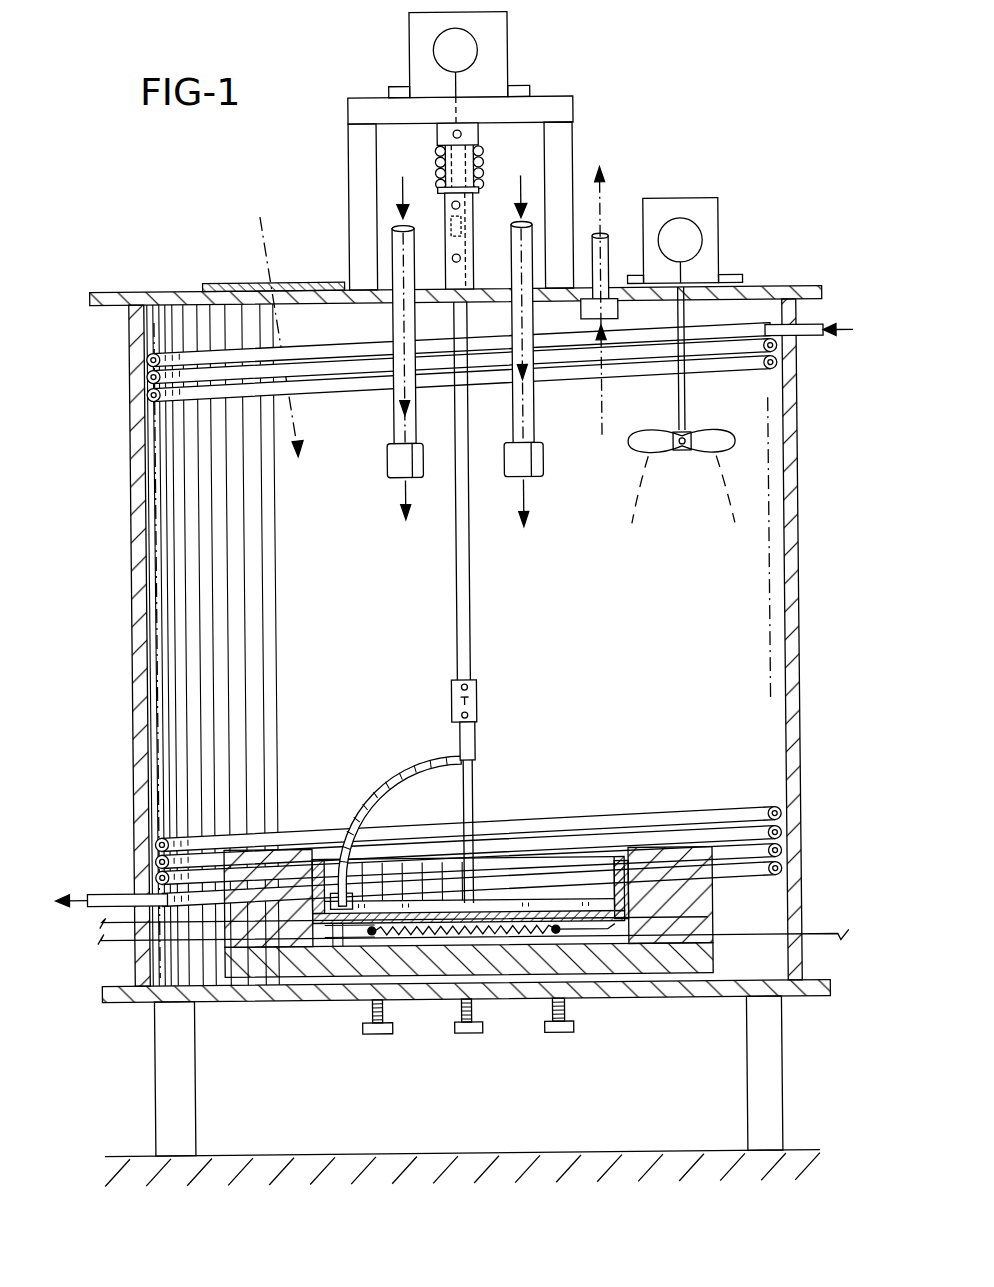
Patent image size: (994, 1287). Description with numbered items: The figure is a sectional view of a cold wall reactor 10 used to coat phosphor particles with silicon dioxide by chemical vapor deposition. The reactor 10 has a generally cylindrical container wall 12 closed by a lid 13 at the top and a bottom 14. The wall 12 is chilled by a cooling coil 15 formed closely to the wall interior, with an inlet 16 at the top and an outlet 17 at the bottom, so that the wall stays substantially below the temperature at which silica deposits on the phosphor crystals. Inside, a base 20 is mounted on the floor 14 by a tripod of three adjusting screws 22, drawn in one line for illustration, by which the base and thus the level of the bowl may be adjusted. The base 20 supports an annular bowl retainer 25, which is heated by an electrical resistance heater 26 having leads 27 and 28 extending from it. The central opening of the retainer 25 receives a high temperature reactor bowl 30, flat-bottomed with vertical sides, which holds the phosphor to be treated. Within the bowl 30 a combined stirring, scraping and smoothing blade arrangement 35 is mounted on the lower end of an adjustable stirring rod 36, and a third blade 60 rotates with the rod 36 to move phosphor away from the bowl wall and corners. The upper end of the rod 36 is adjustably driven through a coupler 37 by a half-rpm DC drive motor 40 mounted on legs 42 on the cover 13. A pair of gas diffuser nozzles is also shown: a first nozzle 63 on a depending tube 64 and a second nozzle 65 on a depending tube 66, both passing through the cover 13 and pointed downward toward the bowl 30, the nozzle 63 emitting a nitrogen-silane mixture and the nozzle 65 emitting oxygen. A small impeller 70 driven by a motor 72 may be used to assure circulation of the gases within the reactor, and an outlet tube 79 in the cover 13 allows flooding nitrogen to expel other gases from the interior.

The cold wall reactor 10 is at (122, 404).
The container wall 12 is at (132, 548).
The lid 13 is at (163, 289).
The bottom 14 is at (258, 1000).
The cooling coil 15 is at (726, 372).
The inlet 16 is at (822, 341).
The outlet 17 is at (114, 890).
The base 20 is at (711, 962).
The adjusting screws 22 is at (462, 1035).
The annular bowl retainer 25 is at (706, 892).
The electrical resistance heater 26 is at (512, 926).
The lead 27 is at (106, 940).
The lead 28 is at (812, 937).
The high temperature reactor bowl 30 is at (602, 862).
The blade arrangement 35 is at (490, 884).
The stirring rod 36 is at (477, 731).
The coupler 37 is at (480, 215).
The DC drive motor 40 is at (514, 45).
The legs 42 is at (352, 150).
The third blade 60 is at (378, 766).
The first nozzle 63 is at (389, 463).
The depending tube 64 is at (396, 420).
The second nozzle 65 is at (546, 463).
The depending tube 66 is at (537, 402).
The impeller 70 is at (723, 456).
The motor 72 is at (722, 214).
The outlet tube 79 is at (611, 240).